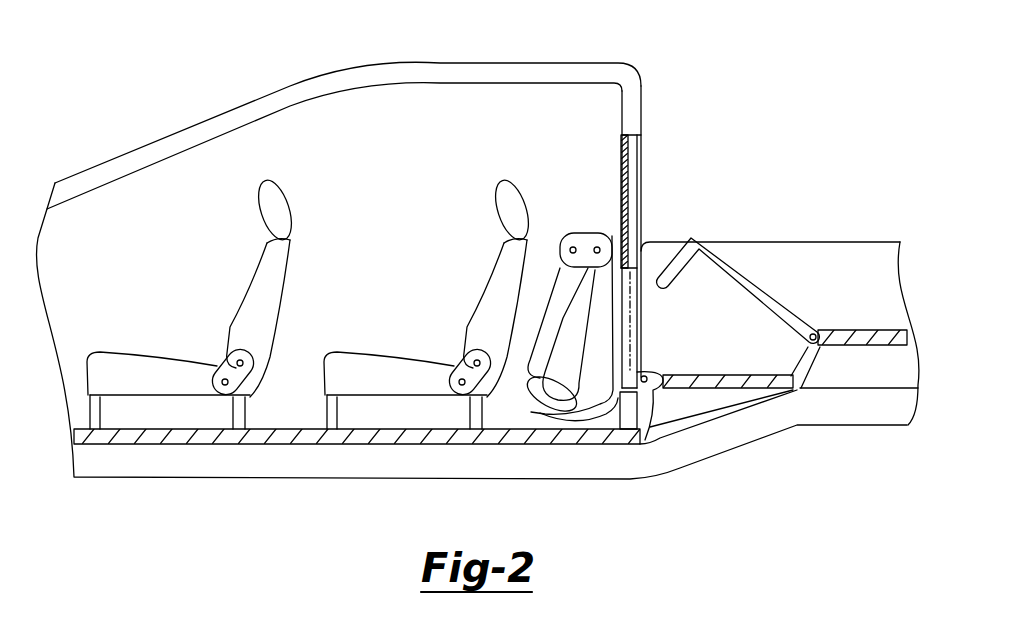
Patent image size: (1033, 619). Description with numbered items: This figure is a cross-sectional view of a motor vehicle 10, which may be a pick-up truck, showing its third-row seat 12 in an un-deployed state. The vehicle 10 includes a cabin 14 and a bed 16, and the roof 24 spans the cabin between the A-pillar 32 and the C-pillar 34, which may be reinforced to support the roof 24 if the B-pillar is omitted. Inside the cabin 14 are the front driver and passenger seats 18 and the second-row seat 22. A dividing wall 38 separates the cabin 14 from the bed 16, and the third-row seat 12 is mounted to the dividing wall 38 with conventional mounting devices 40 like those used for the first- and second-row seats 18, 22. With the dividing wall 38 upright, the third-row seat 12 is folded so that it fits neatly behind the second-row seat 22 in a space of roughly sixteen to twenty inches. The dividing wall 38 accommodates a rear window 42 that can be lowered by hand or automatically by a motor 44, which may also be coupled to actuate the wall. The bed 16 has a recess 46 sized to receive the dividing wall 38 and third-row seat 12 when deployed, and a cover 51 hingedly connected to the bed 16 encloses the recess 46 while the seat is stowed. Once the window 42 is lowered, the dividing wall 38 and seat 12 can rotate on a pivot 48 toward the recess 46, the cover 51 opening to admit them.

The motor vehicle 10 is at (142, 84).
The third-row seat 12 is at (552, 260).
The cabin 14 is at (379, 178).
The bed 16 is at (798, 297).
The front driver and passenger seats 18 is at (236, 293).
The second-row seat 22 is at (473, 297).
The roof 24 is at (587, 72).
The A-pillar 32 is at (210, 122).
The C-pillar 34 is at (638, 121).
The dividing wall 38 is at (641, 318).
The mounting devices 40 is at (100, 421).
The rear window 42 is at (638, 190).
The motor 44 is at (641, 338).
The recess 46 is at (747, 374).
The pivot 48 is at (660, 388).
The cover 51 is at (752, 283).